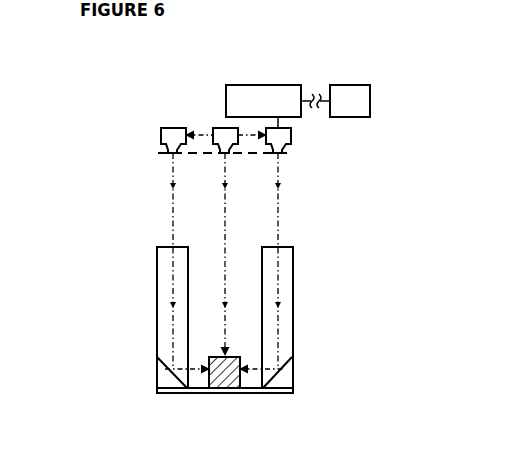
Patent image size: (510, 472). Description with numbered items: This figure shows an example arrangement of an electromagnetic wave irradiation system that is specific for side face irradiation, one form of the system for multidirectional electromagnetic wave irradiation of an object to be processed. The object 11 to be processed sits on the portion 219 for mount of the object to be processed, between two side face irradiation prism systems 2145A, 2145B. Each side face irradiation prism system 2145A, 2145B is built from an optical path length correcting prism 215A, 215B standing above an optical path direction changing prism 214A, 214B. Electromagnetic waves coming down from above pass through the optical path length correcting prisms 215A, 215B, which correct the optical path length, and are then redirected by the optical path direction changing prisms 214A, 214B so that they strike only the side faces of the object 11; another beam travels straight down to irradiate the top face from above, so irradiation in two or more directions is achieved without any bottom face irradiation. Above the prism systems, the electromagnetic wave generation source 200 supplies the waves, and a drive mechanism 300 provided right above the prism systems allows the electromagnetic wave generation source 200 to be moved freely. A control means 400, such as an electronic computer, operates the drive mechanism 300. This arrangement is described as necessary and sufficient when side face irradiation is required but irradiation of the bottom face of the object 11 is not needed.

The electromagnetic wave generation source 200 is at (172, 128).
The drive mechanism 300 is at (278, 113).
The drive control means 400 is at (364, 113).
The optical path length correcting prism 215A is at (166, 247).
The optical path length correcting prism 215B is at (293, 260).
The side face irradiation prism system 2145A is at (140, 280).
The side face irradiation prism system 2145B is at (314, 305).
The optical path direction changing prism 214A is at (156, 370).
The optical path direction changing prism 214B is at (294, 365).
The object to be processed 11 is at (205, 384).
The portion for mount of object to be processed 219 is at (230, 394).